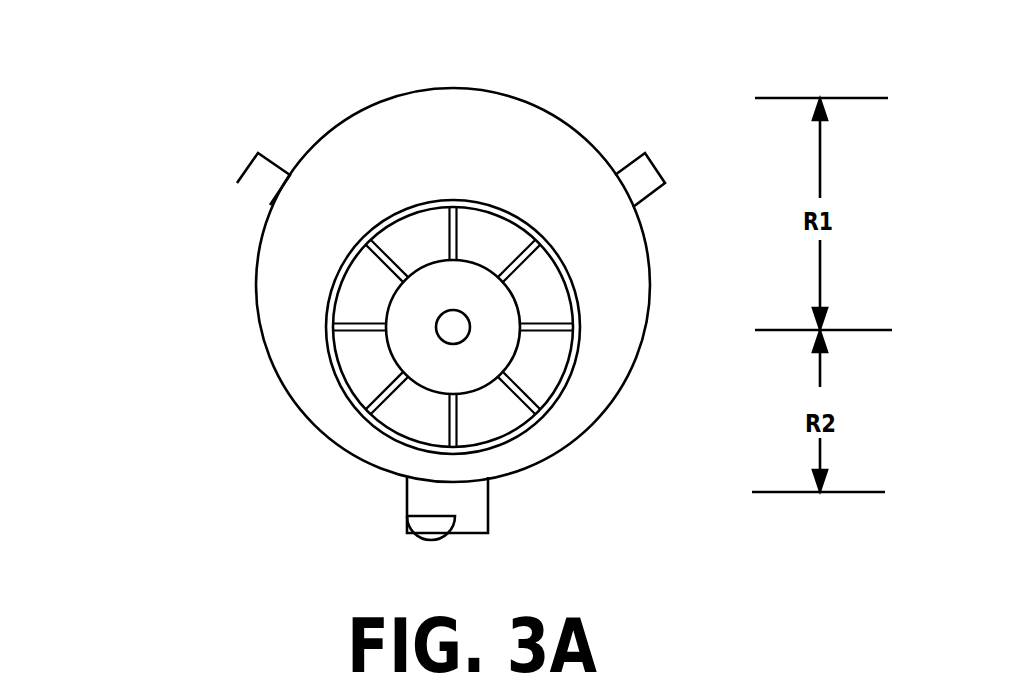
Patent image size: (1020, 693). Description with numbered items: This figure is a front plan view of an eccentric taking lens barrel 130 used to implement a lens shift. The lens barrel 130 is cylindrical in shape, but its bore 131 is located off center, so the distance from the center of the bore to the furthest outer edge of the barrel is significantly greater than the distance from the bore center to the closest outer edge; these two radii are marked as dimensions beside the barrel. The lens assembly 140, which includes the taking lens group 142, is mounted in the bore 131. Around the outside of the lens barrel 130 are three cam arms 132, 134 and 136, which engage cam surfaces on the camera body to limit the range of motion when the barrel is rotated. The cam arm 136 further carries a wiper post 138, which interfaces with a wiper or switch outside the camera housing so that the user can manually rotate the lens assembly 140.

The eccentric taking lens barrel 130 is at (480, 90).
The bore 131 is at (390, 218).
The cam arm 132 is at (247, 190).
The cam arm 134 is at (645, 153).
The cam arm 136 is at (488, 507).
The wiper post 138 is at (428, 540).
The lens assembly 140 is at (335, 373).
The taking lens group 142 is at (440, 342).